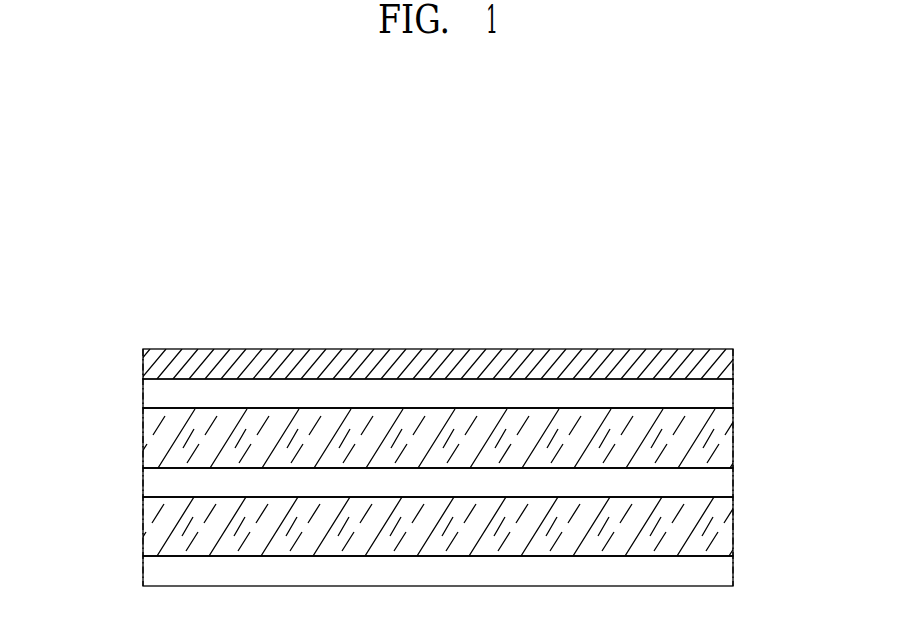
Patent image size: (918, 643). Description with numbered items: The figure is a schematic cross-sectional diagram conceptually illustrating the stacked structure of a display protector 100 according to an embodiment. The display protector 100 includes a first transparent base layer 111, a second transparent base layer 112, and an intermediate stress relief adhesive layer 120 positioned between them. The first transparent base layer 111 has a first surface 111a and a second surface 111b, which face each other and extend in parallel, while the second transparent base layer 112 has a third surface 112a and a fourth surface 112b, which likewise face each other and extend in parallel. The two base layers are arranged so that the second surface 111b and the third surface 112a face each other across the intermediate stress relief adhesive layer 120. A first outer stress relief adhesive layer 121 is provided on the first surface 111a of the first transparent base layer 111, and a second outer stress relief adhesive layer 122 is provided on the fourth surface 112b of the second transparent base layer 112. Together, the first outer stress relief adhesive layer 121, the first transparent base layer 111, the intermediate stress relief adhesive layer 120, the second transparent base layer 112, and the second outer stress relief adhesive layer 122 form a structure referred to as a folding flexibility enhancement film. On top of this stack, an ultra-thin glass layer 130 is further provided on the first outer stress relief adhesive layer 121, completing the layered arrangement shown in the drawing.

The display protector 100 is at (719, 282).
The ultra-thin glass layer 130 is at (724, 365).
The first outer stress relief adhesive layer 121 is at (724, 395).
The first transparent base layer 111 is at (724, 437).
The first surface 111a is at (162, 411).
The second surface 111b is at (162, 466).
The intermediate stress relief adhesive layer 120 is at (724, 483).
The second transparent base layer 112 is at (724, 528).
The third surface 112a is at (162, 501).
The fourth surface 112b is at (162, 556).
The second outer stress relief adhesive layer 122 is at (724, 570).